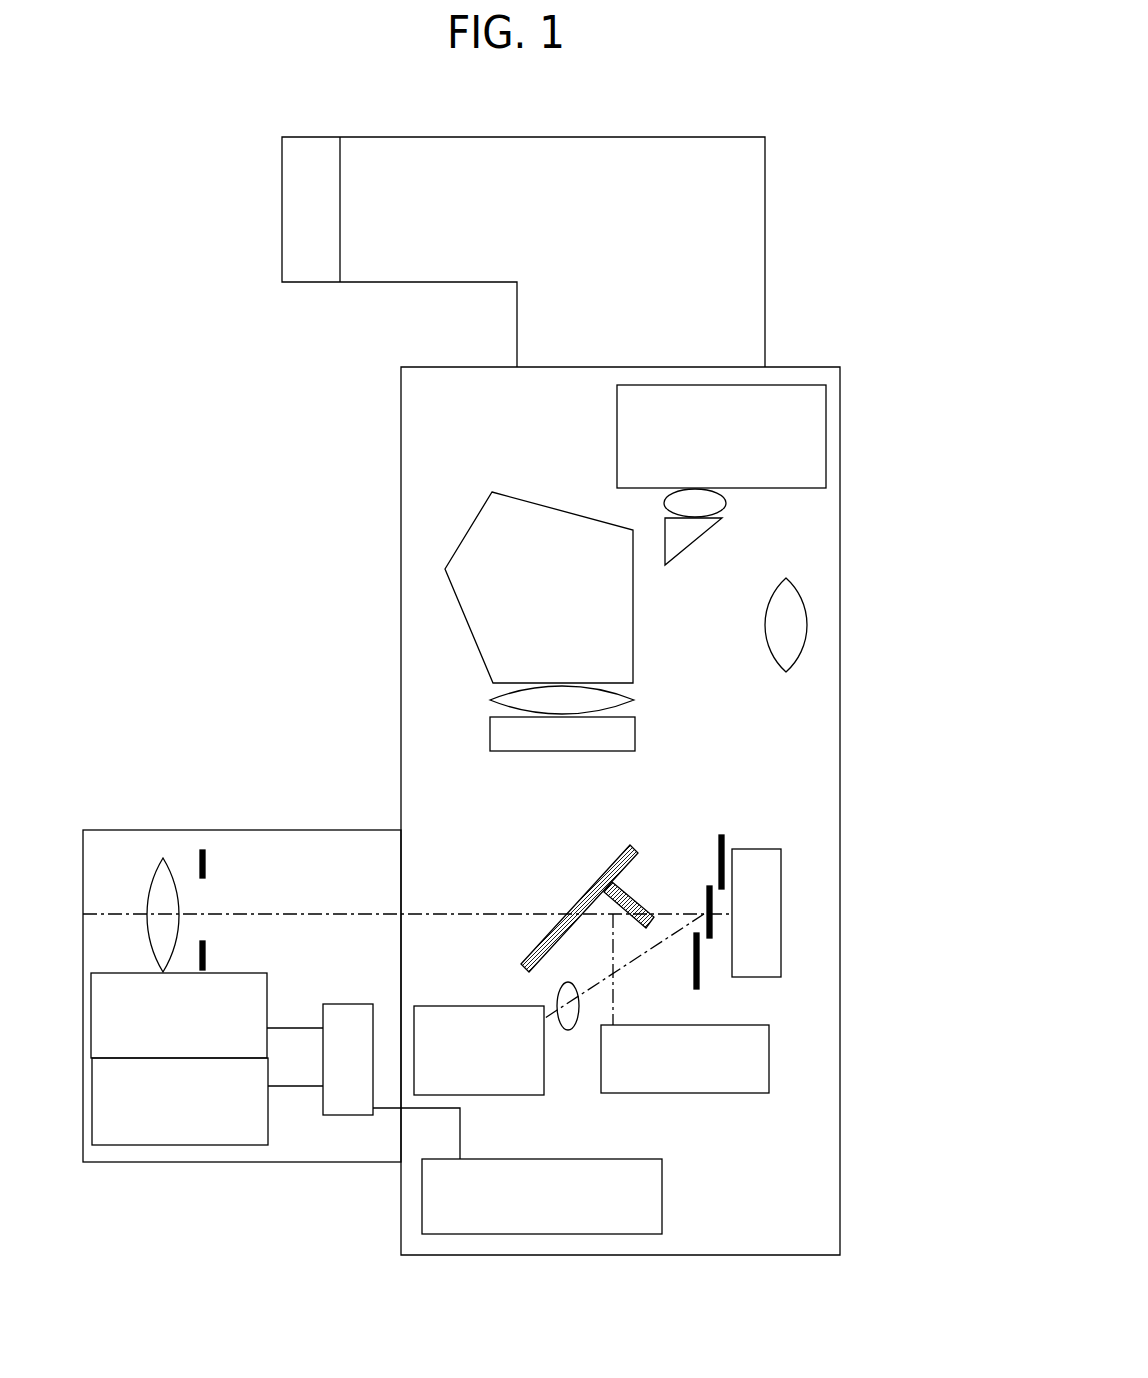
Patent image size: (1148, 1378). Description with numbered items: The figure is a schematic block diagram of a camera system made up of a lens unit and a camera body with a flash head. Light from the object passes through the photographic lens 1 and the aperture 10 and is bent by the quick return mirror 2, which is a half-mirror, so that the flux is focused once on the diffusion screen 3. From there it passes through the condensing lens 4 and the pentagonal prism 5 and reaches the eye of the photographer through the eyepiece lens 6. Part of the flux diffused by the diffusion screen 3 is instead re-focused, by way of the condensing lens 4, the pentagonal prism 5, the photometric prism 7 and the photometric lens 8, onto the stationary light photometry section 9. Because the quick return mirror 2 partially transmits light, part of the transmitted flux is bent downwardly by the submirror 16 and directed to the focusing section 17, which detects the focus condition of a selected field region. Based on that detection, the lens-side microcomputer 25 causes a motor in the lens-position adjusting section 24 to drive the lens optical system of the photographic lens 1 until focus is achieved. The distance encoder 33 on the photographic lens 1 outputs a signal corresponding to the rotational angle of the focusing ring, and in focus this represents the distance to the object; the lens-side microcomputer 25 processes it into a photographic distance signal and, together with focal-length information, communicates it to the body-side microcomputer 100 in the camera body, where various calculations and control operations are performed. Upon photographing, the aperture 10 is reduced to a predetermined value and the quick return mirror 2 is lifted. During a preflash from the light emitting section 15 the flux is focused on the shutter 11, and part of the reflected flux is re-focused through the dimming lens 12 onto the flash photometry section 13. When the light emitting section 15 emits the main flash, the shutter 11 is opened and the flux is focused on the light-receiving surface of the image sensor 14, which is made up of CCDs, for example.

The photographic lens 1 is at (160, 880).
The quick return mirror 2 is at (617, 859).
The diffusion screen 3 is at (498, 737).
The condensing lens 4 is at (498, 693).
The pentagonal prism 5 is at (472, 540).
The eyepiece lens 6 is at (772, 643).
The photometric prism 7 is at (668, 536).
The photometric lens 8 is at (710, 507).
The stationary light photometry section 9 is at (623, 395).
The aperture 10 is at (207, 857).
The shutter 11 is at (719, 844).
The dimming lens 12 is at (566, 1020).
The flash photometry section 13 is at (522, 1088).
The image sensor 14 is at (775, 962).
The light emitting section 15 is at (287, 238).
The submirror 16 is at (627, 897).
The focusing section 17 is at (737, 1088).
The lens-position adjusting section 24 is at (258, 990).
The lens-side microcomputer 25 is at (332, 1107).
The distance encoder 33 is at (108, 1138).
The body-side microcomputer 100 is at (651, 1219).